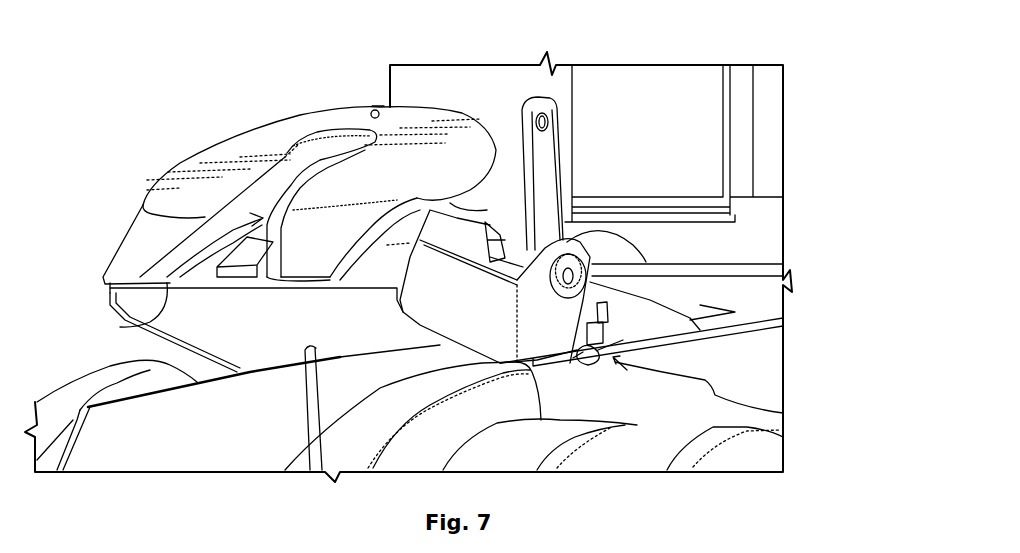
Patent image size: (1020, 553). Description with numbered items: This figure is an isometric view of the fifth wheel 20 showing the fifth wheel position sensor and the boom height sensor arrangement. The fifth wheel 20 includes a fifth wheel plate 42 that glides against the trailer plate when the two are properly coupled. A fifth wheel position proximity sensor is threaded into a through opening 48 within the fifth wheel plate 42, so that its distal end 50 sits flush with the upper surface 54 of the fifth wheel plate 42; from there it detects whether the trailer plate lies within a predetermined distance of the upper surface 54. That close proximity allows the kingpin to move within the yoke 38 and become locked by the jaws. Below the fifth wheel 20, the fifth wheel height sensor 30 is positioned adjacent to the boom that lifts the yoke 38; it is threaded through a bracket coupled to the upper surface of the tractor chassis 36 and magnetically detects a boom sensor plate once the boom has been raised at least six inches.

The fifth wheel 20 is at (128, 196).
The fifth wheel height sensor 30 is at (783, 413).
The tractor chassis 36 is at (723, 357).
The yoke 38 is at (122, 326).
The fifth wheel plate 42 is at (251, 138).
The through opening 48 is at (372, 108).
The distal end 50 is at (378, 105).
The upper surface 54 is at (410, 120).